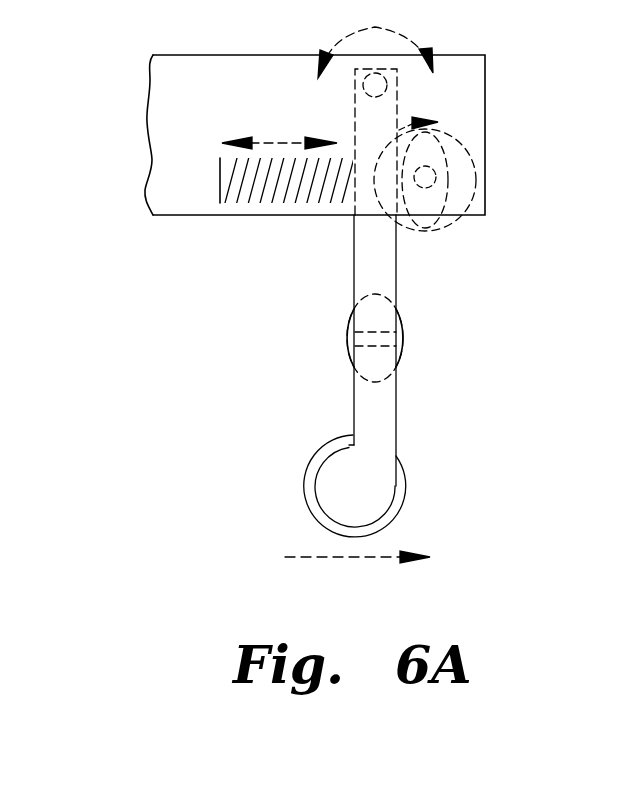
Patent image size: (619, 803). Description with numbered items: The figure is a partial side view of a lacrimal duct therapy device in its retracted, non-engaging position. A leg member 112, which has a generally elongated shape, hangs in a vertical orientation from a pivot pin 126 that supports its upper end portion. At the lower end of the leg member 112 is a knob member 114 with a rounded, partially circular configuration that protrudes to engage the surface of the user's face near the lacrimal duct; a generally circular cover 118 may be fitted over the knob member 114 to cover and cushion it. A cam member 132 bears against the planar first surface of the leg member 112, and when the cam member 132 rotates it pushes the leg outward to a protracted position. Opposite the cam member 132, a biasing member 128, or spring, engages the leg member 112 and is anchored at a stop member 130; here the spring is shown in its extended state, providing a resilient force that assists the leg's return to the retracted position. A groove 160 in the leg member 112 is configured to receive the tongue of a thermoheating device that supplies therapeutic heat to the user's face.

The leg member 112 is at (397, 248).
The knob member 114 is at (353, 487).
The cover 118 is at (397, 499).
The pivot pin 126 is at (375, 85).
The biasing member 128 is at (271, 228).
The stop member 130 is at (220, 178).
The cam member 132 is at (447, 162).
The groove 160 is at (347, 337).